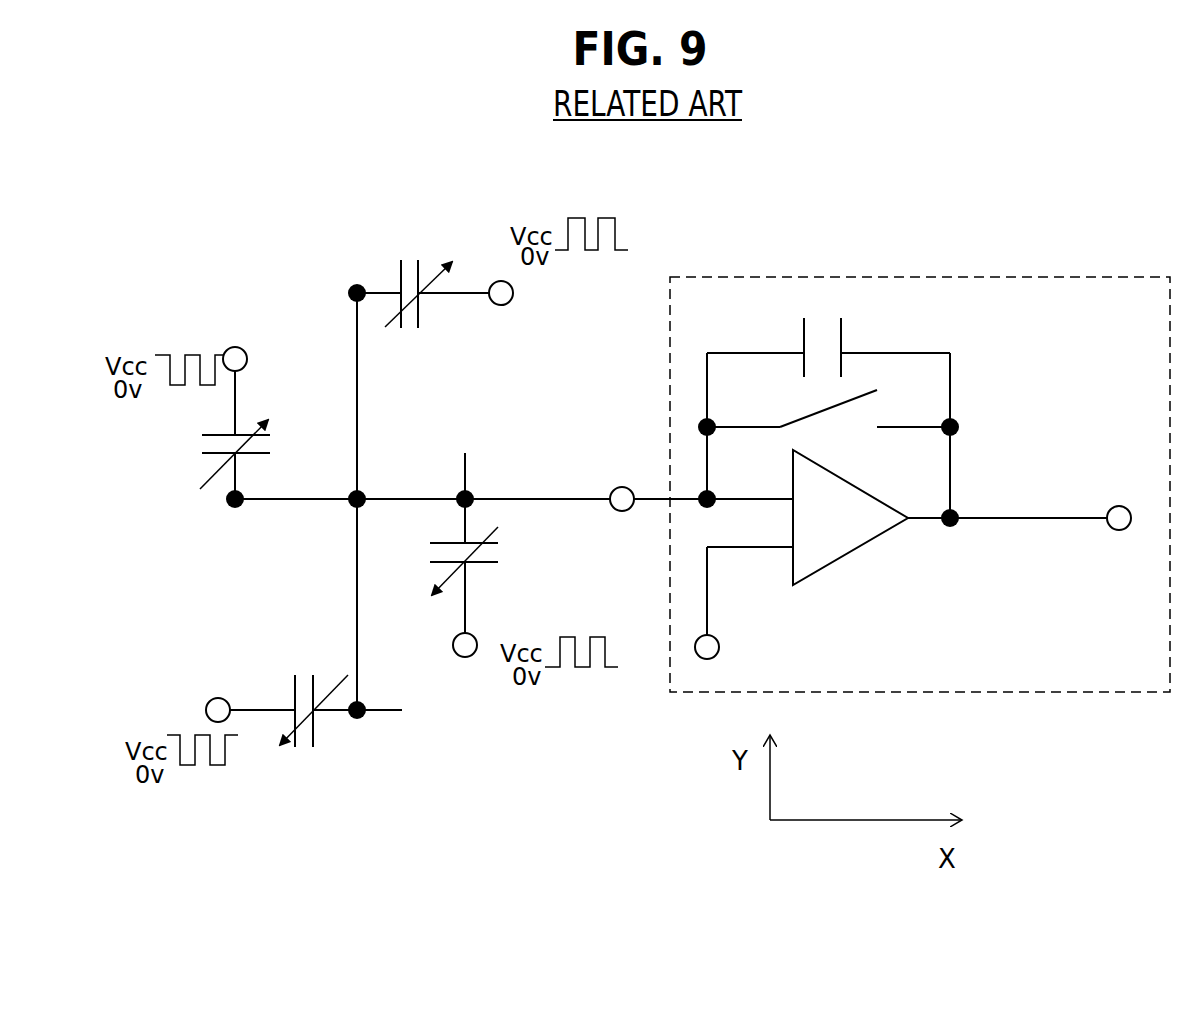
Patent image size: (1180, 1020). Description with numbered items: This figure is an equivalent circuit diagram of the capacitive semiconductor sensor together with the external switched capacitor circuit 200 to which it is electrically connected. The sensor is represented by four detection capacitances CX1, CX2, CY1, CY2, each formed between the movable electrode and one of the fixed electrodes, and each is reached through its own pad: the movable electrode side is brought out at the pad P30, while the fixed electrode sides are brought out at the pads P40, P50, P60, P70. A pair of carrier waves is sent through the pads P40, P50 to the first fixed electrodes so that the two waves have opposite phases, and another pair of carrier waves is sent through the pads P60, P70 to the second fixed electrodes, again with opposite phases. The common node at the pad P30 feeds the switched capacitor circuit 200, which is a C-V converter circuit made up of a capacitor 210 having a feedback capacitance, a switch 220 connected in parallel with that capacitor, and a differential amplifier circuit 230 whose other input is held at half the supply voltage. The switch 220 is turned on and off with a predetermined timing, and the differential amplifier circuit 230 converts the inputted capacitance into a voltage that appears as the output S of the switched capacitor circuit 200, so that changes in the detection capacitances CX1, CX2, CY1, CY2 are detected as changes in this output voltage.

The switched capacitor circuit 200 is at (862, 275).
The capacitor 210 is at (800, 338).
The switch 220 is at (866, 392).
The differential amplifier circuit 230 is at (860, 550).
The pad P30 is at (622, 486).
The pad P40 is at (206, 710).
The pad P50 is at (511, 300).
The pad P60 is at (455, 641).
The pad P70 is at (246, 365).
The detection capacitance CX1 is at (316, 730).
The detection capacitance CX2 is at (423, 275).
The detection capacitance CY1 is at (500, 543).
The detection capacitance CY2 is at (202, 435).
The output S is at (1040, 502).